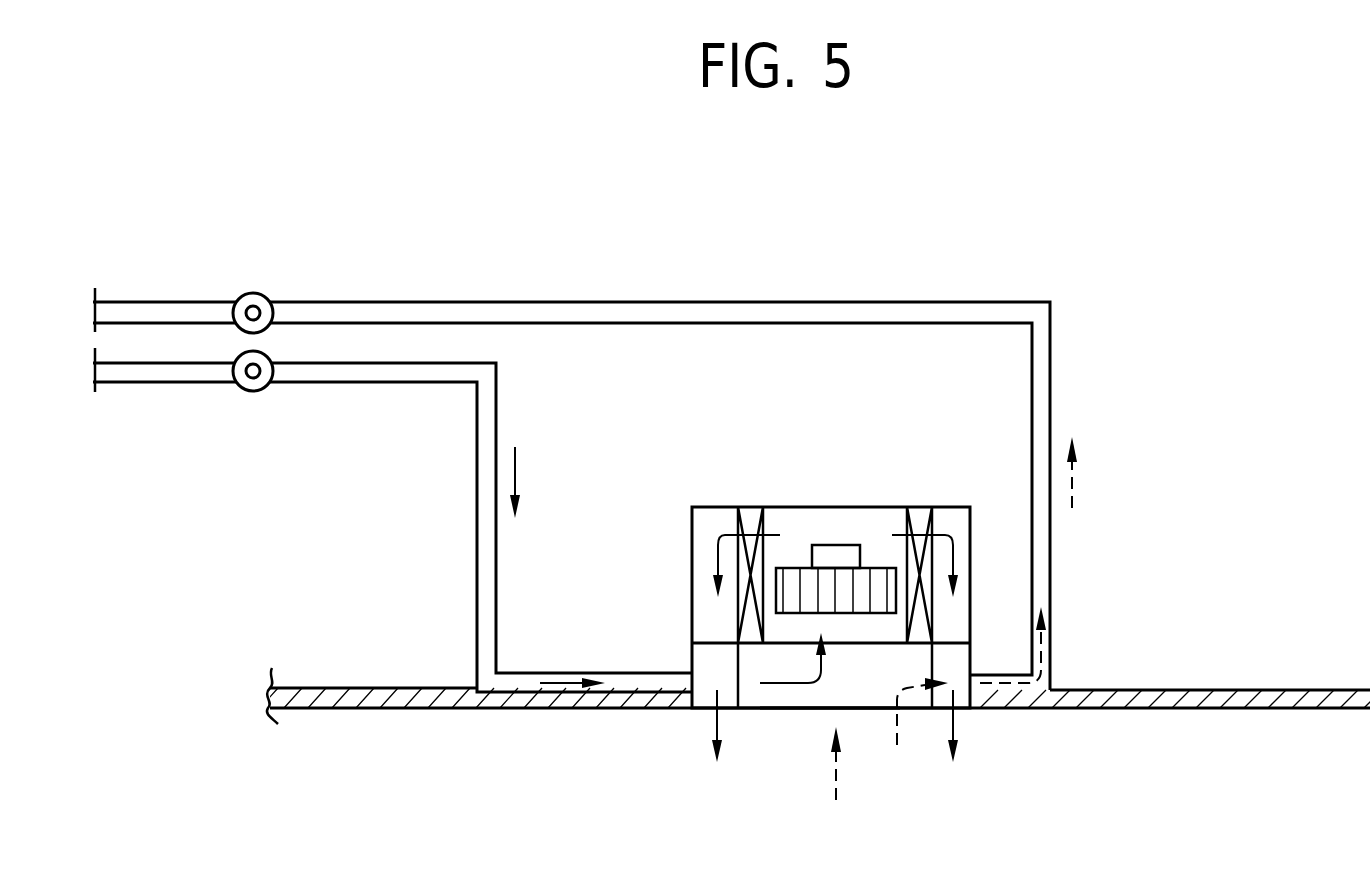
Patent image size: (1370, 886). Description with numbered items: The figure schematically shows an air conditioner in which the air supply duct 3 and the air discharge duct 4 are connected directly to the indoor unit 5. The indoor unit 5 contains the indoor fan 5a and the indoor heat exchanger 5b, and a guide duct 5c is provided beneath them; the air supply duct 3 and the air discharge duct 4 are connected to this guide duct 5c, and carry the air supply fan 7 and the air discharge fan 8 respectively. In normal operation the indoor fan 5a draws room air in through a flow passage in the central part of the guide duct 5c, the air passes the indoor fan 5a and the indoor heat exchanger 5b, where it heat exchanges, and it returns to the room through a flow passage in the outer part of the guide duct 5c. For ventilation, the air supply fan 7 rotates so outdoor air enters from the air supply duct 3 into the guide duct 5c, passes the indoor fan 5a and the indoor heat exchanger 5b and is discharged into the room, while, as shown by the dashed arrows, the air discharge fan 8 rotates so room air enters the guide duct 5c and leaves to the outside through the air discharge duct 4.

The air supply duct 3 is at (393, 383).
The air discharge duct 4 is at (400, 313).
The indoor unit 5 is at (802, 484).
The indoor fan 5a is at (875, 575).
The indoor heat exchanger 5b is at (752, 620).
The guide duct 5c is at (792, 725).
The air supply fan 7 is at (253, 393).
The air discharge fan 8 is at (253, 292).